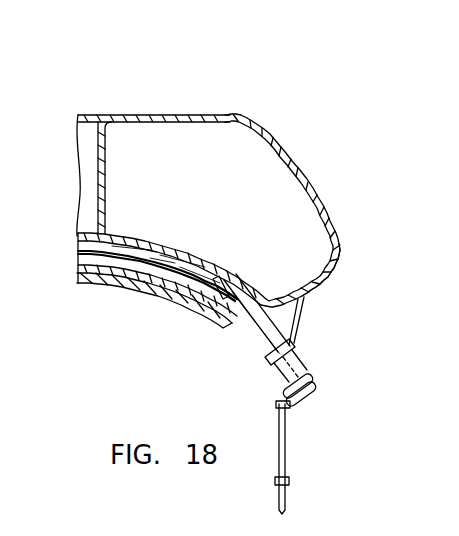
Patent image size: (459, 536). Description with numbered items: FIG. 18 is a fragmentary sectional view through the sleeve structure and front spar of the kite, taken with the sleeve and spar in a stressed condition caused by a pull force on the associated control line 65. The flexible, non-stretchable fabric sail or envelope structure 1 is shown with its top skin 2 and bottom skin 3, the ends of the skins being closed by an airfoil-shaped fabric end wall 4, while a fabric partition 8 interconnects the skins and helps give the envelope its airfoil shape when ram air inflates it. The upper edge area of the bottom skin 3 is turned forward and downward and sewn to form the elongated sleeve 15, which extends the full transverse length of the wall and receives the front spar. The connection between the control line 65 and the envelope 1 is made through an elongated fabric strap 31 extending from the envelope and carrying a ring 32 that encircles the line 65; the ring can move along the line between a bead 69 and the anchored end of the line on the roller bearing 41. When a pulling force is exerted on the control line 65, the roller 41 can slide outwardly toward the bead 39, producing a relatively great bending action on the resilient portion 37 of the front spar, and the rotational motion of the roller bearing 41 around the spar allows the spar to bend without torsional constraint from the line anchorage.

The fabric sail envelope structure 1 is at (289, 150).
The top skin 2 is at (158, 117).
The bottom skin 3 is at (181, 240).
The fabric end wall 4 is at (336, 258).
The fabric partition 8 is at (104, 180).
The sleeve 15 is at (86, 272).
The fabric strap 31 is at (296, 321).
The ring 32 is at (276, 405).
The resilient portion of front spar 37 is at (251, 318).
The bead 39 is at (318, 393).
The roller bearing 41 is at (276, 372).
The control line 65 is at (287, 445).
The bead 69 is at (289, 484).